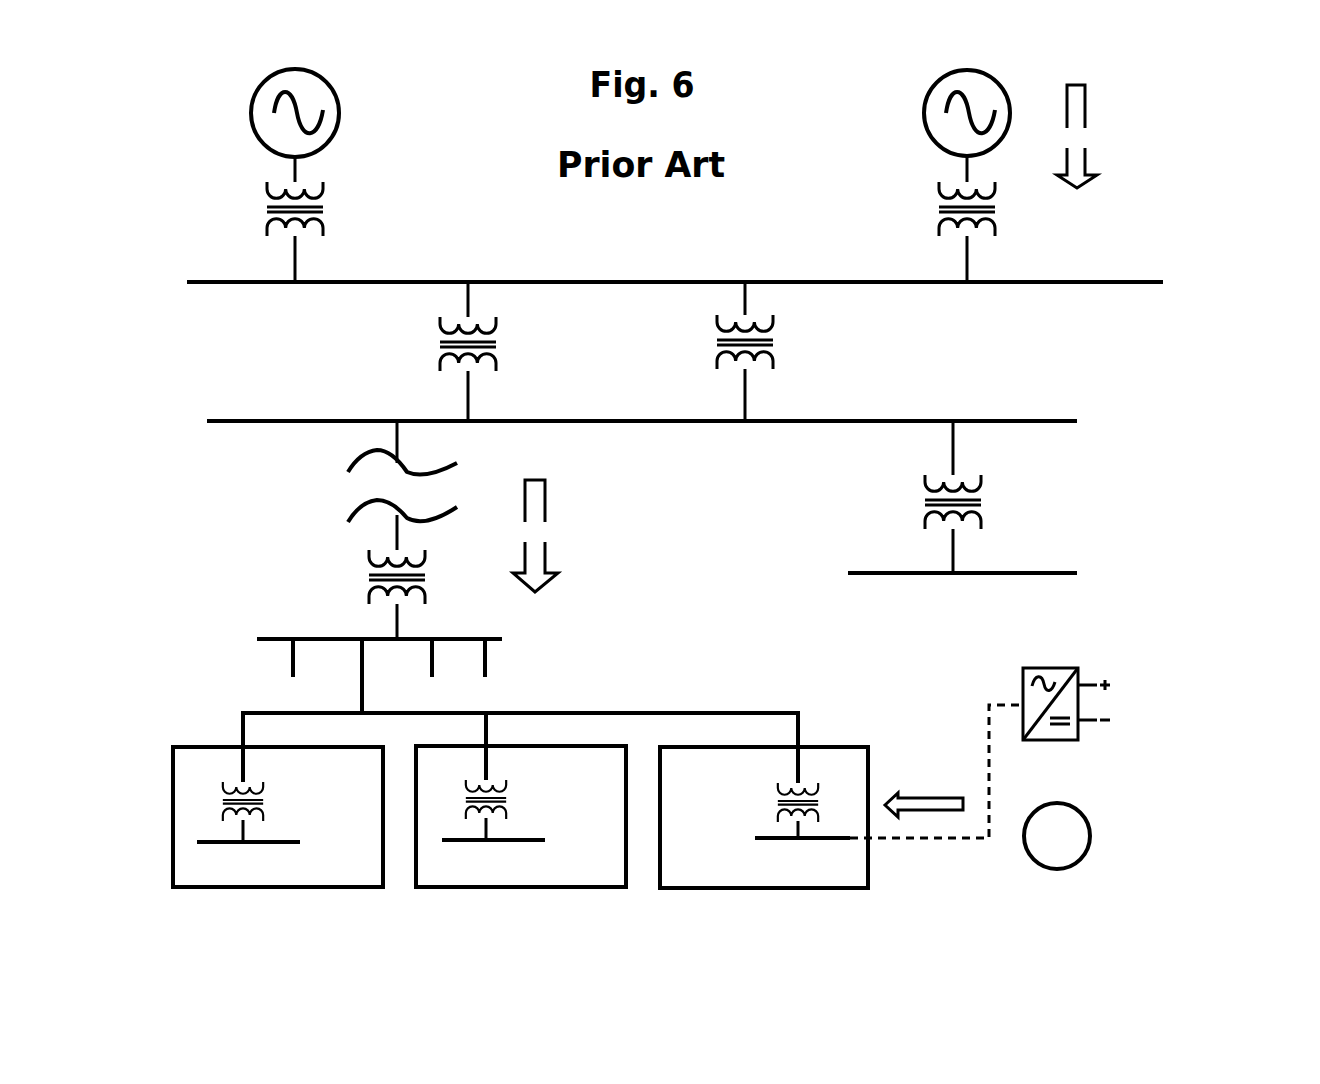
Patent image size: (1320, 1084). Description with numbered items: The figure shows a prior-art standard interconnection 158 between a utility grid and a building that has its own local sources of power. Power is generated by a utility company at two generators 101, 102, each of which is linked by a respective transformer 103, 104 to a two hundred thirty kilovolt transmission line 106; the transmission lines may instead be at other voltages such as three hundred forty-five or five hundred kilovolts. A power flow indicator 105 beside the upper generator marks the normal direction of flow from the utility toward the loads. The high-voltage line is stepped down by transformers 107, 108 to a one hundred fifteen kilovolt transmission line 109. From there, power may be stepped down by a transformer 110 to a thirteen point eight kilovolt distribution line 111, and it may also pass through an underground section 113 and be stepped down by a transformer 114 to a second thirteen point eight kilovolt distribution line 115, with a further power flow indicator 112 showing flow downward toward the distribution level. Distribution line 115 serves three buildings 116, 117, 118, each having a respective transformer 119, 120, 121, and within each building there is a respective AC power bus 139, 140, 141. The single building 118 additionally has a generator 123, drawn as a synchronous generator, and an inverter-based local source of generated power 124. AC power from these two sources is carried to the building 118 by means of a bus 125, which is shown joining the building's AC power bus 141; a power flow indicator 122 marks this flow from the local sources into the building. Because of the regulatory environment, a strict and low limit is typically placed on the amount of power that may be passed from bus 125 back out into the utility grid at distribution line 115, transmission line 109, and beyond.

The prior art power distribution system 158 is at (213, 115).
The generator 101 is at (340, 102).
The generator 102 is at (918, 133).
The transformer 103 is at (333, 220).
The transformer 104 is at (928, 227).
The power flow arrow 105 is at (1142, 137).
The 230 kilovolt transmission line 106 is at (596, 273).
The transformer 107 is at (432, 365).
The transformer 108 is at (715, 360).
The 115 kilovolt transmission line 109 is at (853, 410).
The transformer 110 is at (990, 492).
The 13.8 kilovolt distribution line 111 is at (1037, 567).
The power flow arrow 112 is at (570, 558).
The underground cable 113 is at (385, 435).
The transformer 114 is at (358, 603).
The 13.8 kilovolt distribution line 115 is at (275, 648).
The building 116 is at (243, 783).
The building 117 is at (535, 777).
The building 118 is at (764, 781).
The transformer 119 is at (218, 800).
The transformer 120 is at (513, 800).
The transformer 121 is at (772, 805).
The power flow arrow 122 is at (927, 738).
The generator 123 is at (1095, 842).
The inverter-based local source of generated power 124 is at (1095, 703).
The bus 125 is at (983, 718).
The AC power bus 139 is at (215, 848).
The AC power bus 140 is at (528, 850).
The AC power bus 141 is at (765, 830).